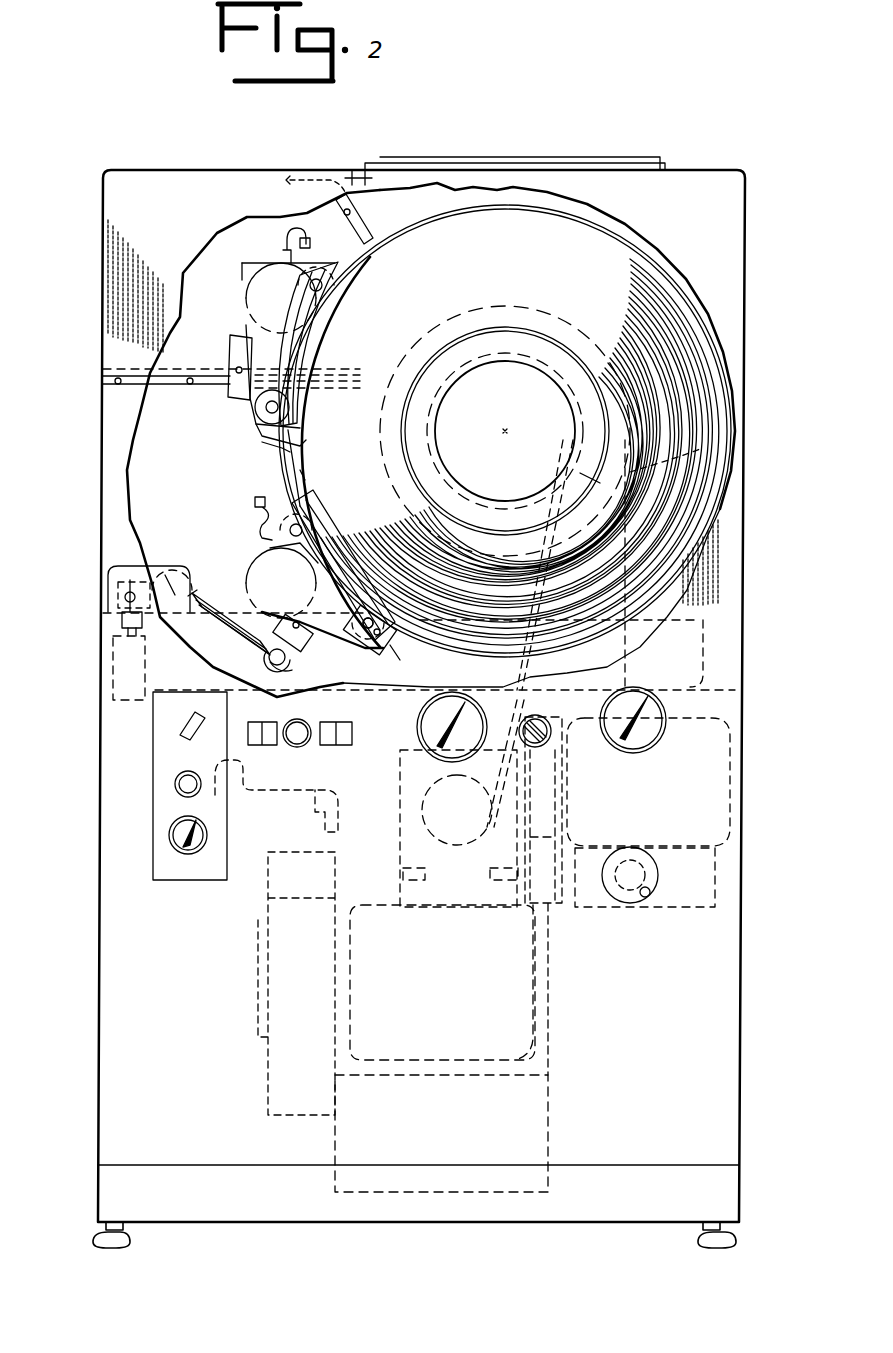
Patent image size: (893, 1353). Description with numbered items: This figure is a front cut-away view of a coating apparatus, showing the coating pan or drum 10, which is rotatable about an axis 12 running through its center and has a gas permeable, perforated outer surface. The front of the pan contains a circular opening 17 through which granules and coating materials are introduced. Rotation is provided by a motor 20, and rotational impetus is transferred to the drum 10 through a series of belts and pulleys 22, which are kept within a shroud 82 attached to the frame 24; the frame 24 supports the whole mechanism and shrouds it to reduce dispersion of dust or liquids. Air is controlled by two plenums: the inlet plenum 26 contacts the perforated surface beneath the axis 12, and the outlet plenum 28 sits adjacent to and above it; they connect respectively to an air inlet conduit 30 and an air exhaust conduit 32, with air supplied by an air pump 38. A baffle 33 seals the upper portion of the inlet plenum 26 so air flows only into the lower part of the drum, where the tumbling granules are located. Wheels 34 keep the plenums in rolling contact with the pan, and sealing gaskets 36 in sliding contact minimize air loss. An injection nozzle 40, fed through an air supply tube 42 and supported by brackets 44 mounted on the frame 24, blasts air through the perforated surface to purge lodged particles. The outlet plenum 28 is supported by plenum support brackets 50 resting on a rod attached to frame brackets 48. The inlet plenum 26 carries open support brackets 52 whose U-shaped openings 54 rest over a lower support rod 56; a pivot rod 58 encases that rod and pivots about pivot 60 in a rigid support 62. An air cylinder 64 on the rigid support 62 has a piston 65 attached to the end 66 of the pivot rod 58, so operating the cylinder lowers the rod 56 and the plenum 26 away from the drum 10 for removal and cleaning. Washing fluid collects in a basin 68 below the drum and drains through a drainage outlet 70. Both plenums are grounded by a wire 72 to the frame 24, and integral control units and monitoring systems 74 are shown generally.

The coating pan or drum 10 is at (703, 323).
The axis 12 is at (510, 432).
The circular opening 17 is at (536, 392).
The motor 20 is at (720, 792).
The belts and pulleys 22 is at (535, 670).
The frame 24 is at (185, 185).
The inlet plenum 26 is at (370, 651).
The outlet plenum 28 is at (246, 313).
The air inlet conduit 30 is at (262, 568).
The air exhaust conduit 32 is at (262, 281).
The baffle 33 is at (330, 537).
The wheels 34 is at (322, 273).
The sealing gaskets 36 is at (280, 451).
The air pump 38 is at (540, 1004).
The injection nozzle 40 is at (367, 226).
The air supply tube 42 is at (300, 196).
The brackets 44 is at (352, 170).
The frame brackets 48 is at (167, 388).
The plenum support brackets 50 is at (230, 353).
The open support brackets 52 is at (262, 621).
The U-shaped opening 54 is at (291, 670).
The lower support rod 56 is at (240, 670).
The pivot rod 58 is at (205, 630).
The pivot 60 is at (190, 566).
The rigid support 62 is at (110, 595).
The air cylinder 64 is at (110, 688).
The piston 65 is at (115, 623).
The end of the pivot rod 66 is at (130, 588).
The basin 68 is at (700, 662).
The drainage outlet 70 is at (300, 794).
The wire 72 is at (283, 241).
The control units and monitoring systems 74 is at (193, 880).
The shroud 82 is at (700, 442).